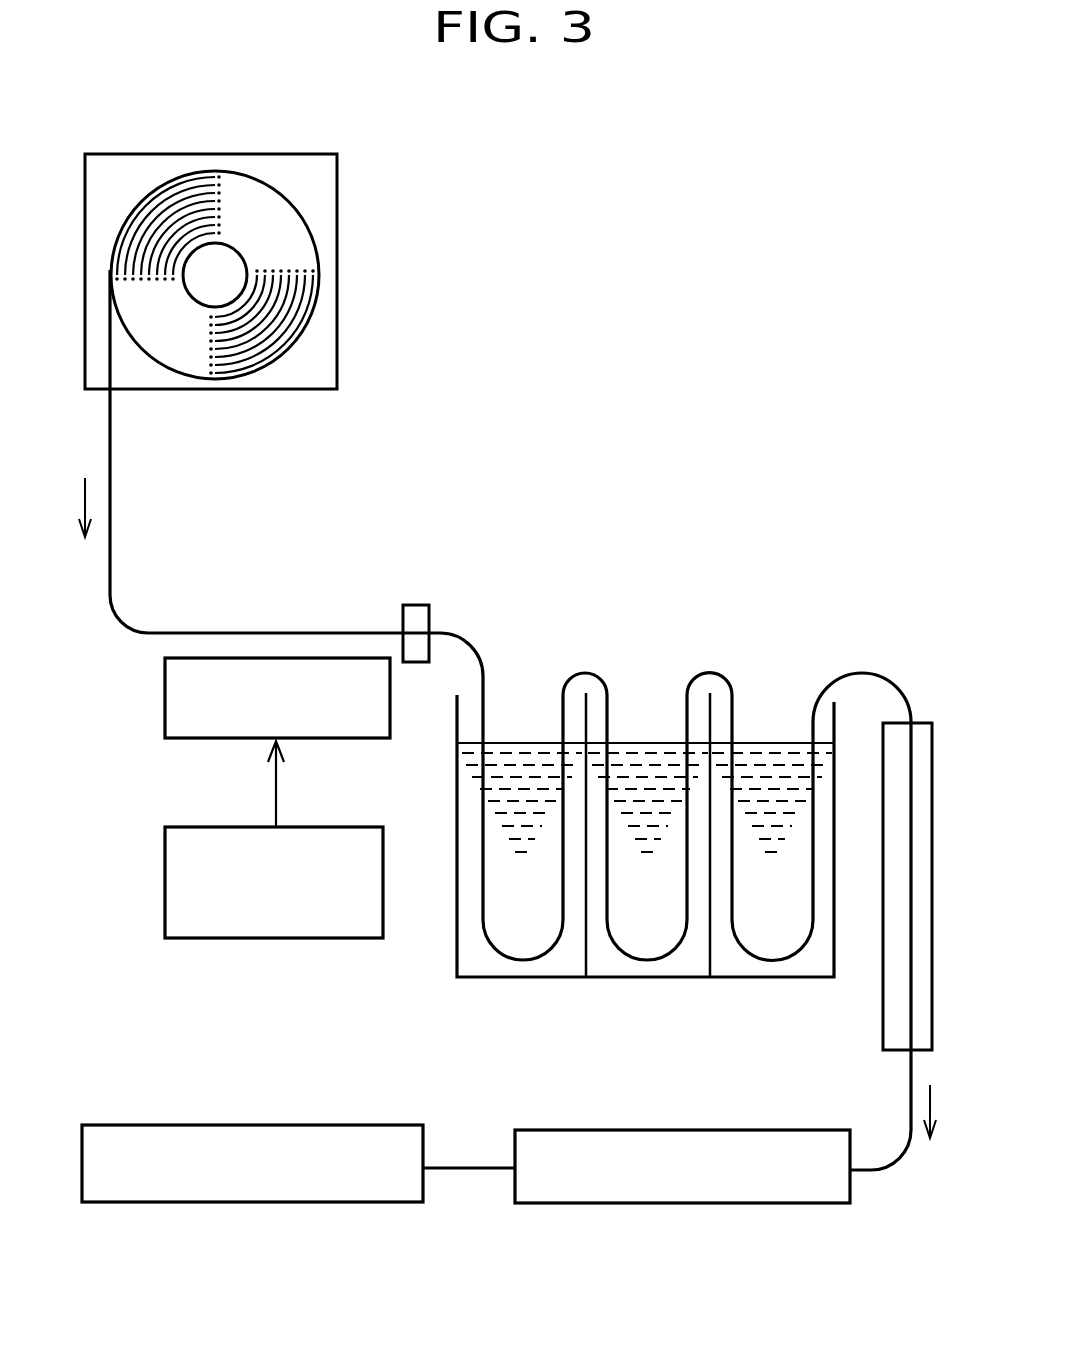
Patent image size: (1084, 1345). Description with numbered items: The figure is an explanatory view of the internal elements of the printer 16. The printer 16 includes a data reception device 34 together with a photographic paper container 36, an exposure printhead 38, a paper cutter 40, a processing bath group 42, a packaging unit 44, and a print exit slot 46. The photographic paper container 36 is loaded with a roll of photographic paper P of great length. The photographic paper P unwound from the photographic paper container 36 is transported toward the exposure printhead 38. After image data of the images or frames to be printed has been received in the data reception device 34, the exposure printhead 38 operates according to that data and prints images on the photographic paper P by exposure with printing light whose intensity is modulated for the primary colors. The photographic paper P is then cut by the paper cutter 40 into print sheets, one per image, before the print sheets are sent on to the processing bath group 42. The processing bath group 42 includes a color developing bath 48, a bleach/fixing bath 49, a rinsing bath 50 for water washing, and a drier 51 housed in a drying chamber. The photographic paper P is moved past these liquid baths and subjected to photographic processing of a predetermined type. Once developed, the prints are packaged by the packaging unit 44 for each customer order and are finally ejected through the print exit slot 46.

The printer 16 is at (683, 206).
The photographic paper container 36 is at (337, 224).
The photographic paper P is at (110, 478).
The paper cutter 40 is at (417, 604).
The exposure printhead 38 is at (165, 705).
The data reception device 34 is at (165, 880).
The processing bath group 42 is at (645, 679).
The color developing bath 48 is at (530, 665).
The bleach/fixing bath 49 is at (652, 665).
The rinsing bath 50 is at (778, 665).
The drier 51 is at (920, 708).
The print exit slot 46 is at (270, 1203).
The packaging unit 44 is at (680, 1203).